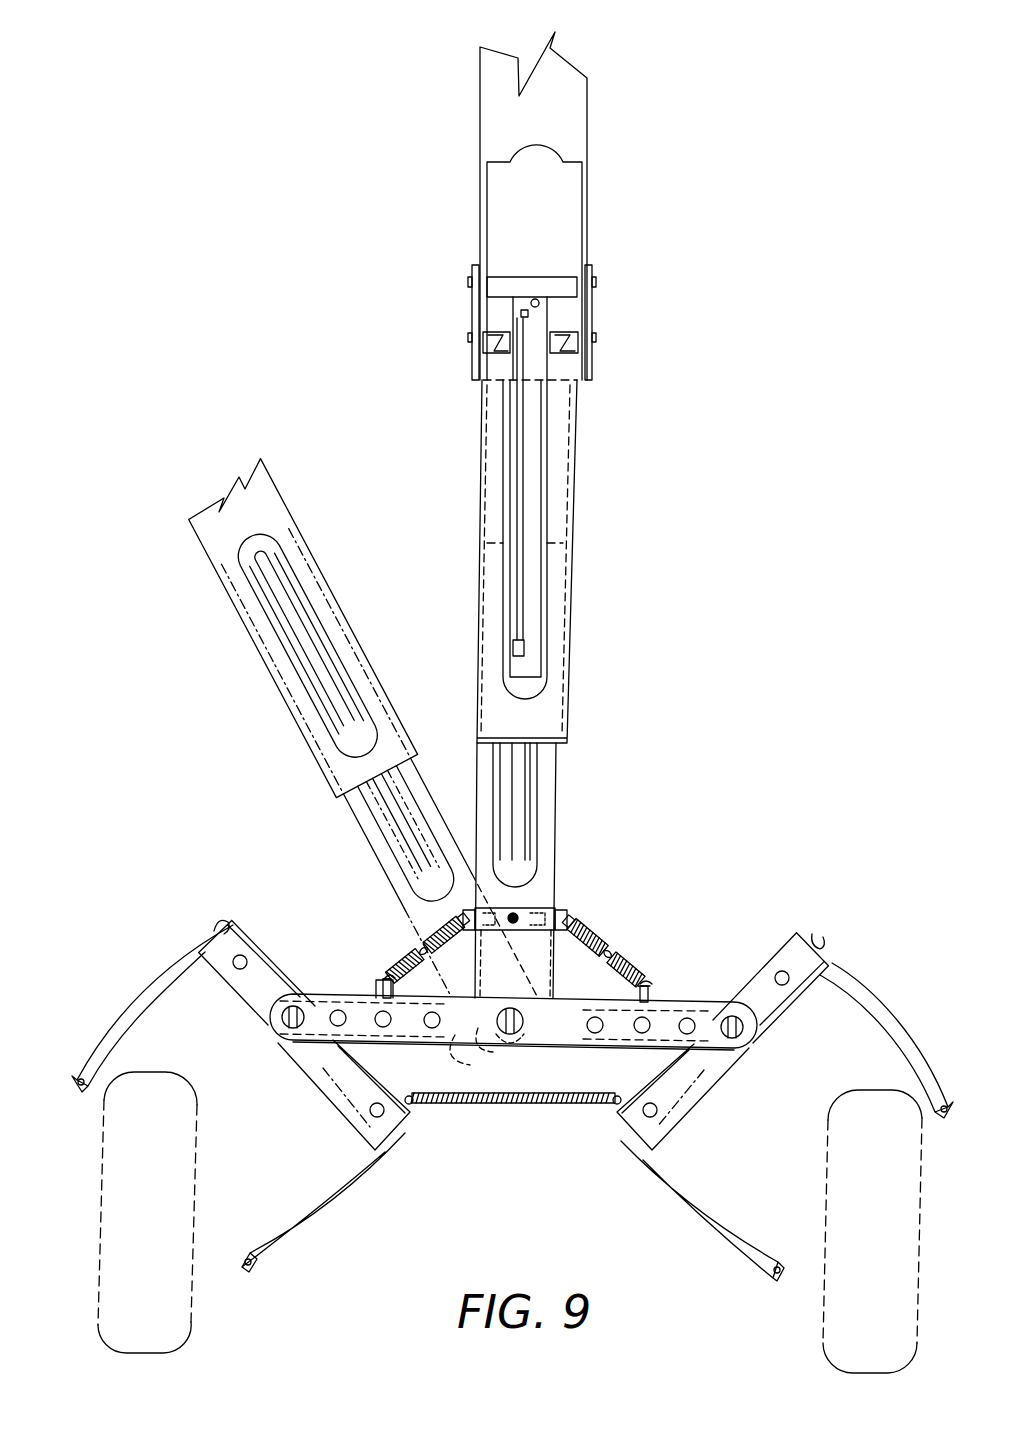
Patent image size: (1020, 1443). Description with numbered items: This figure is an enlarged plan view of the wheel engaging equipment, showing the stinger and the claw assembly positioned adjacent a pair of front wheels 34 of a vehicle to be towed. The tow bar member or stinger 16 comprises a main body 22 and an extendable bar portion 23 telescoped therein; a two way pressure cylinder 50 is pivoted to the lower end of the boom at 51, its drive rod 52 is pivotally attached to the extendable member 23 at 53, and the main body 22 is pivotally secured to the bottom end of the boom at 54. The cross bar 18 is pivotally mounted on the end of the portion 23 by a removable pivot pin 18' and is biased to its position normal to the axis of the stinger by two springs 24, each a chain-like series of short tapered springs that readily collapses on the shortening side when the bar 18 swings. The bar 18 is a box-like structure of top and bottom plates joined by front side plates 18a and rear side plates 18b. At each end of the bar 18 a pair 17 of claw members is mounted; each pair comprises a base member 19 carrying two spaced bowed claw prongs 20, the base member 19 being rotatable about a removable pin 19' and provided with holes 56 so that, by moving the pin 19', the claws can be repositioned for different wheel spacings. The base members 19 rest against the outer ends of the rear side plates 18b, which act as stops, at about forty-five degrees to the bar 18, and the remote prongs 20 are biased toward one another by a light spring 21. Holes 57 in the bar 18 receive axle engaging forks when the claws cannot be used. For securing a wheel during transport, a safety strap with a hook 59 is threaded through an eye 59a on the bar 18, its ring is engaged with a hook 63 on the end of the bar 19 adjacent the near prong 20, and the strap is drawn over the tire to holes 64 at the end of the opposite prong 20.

The tow bar member 16 is at (634, 653).
The pair of claw members 17 is at (280, 1133).
The cross bar 18 is at (513, 1034).
The pivot pin 18' is at (537, 1046).
The front side plate 18a is at (684, 1002).
The rear side plate 18b is at (462, 1056).
The base member 19 is at (513, 1095).
The pivot pin 19' is at (516, 1003).
The claw prong 20 is at (141, 1012).
The spring 21 is at (516, 1108).
The main body 22 is at (576, 518).
The extendable bar portion 23 is at (560, 768).
The spring 24 is at (432, 930).
The front wheel 34 is at (198, 1338).
The pressure cylinder 50 is at (542, 402).
The cylinder pivot 51 is at (596, 280).
The drive rod 52 is at (527, 822).
The rod pivot 53 is at (534, 912).
The main body pivot 54 is at (596, 338).
The holes 56 is at (240, 970).
The holes 57 is at (340, 1011).
The hook 59 is at (652, 982).
The eye 59a is at (650, 992).
The hook 63 is at (218, 920).
The holes 64 is at (78, 1082).